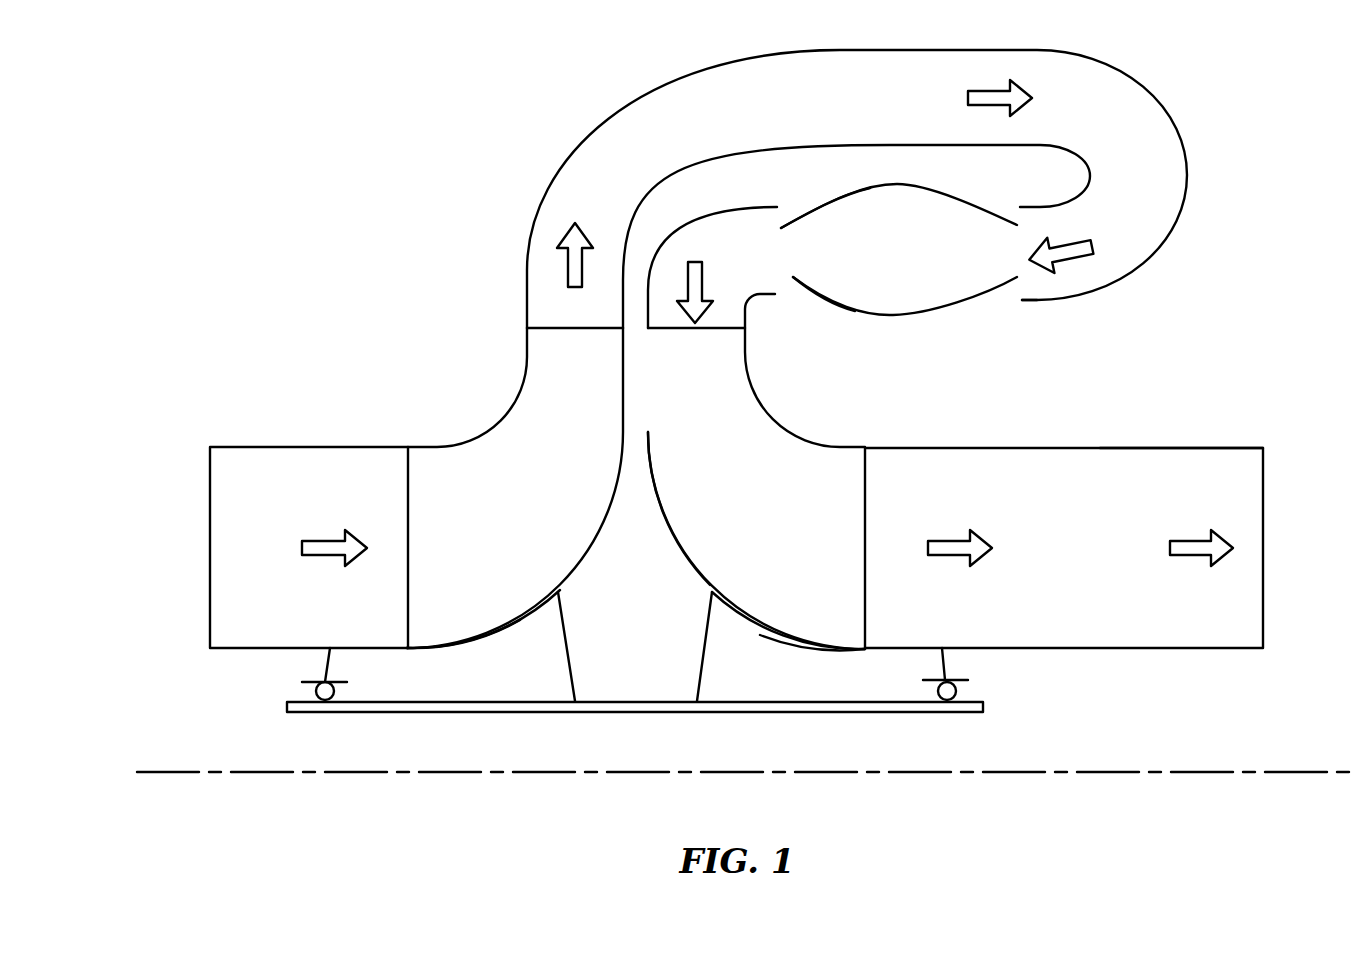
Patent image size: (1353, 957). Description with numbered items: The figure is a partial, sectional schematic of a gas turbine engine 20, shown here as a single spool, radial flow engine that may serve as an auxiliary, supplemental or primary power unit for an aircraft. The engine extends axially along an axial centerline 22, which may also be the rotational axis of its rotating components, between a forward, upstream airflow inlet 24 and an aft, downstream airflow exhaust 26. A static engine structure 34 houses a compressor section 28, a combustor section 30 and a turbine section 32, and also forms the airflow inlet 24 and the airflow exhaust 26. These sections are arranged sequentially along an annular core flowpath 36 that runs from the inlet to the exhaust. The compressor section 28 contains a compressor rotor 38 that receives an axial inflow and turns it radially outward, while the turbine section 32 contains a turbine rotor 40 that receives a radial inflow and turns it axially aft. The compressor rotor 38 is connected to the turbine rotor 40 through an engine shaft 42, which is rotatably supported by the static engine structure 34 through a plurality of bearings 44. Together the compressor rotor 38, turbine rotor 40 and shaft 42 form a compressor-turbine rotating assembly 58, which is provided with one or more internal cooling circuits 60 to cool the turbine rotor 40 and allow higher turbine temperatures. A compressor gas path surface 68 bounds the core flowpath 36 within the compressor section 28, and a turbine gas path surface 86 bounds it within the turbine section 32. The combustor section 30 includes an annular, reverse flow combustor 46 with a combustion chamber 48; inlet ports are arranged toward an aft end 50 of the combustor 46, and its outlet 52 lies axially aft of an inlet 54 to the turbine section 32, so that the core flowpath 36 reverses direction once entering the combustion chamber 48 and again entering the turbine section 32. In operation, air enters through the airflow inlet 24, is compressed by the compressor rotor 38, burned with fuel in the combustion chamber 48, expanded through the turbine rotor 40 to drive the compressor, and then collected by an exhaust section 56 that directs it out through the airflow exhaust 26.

The gas turbine engine 20 is at (348, 218).
The axial centerline 22 is at (150, 773).
The airflow inlet 24 is at (210, 502).
The airflow exhaust 26 is at (1263, 597).
The compressor section 28 is at (457, 387).
The combustor section 30 is at (1010, 343).
The turbine section 32 is at (805, 425).
The static engine structure 34 is at (575, 143).
The core flowpath 36 is at (258, 548).
The compressor rotor 38 is at (507, 633).
The turbine rotor 40 is at (768, 638).
The engine shaft 42 is at (628, 700).
The bearings 44 is at (315, 690).
The combustor 46 is at (902, 178).
The combustion chamber 48 is at (912, 266).
The aft end 50 is at (1022, 263).
The outlet 52 is at (783, 268).
The inlet 54 is at (781, 227).
The exhaust section 56 is at (1177, 432).
The compressor-turbine rotating assembly 58 is at (702, 640).
The internal cooling circuit 60 is at (677, 545).
The compressor gas path surface 68 is at (467, 637).
The turbine gas path surface 86 is at (748, 615).